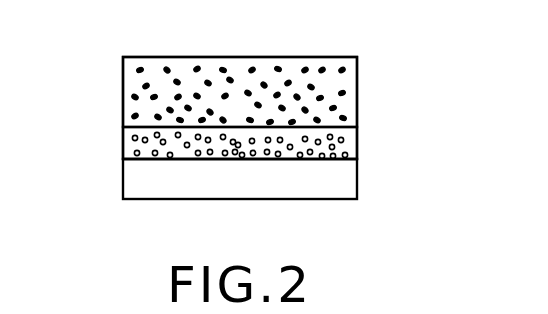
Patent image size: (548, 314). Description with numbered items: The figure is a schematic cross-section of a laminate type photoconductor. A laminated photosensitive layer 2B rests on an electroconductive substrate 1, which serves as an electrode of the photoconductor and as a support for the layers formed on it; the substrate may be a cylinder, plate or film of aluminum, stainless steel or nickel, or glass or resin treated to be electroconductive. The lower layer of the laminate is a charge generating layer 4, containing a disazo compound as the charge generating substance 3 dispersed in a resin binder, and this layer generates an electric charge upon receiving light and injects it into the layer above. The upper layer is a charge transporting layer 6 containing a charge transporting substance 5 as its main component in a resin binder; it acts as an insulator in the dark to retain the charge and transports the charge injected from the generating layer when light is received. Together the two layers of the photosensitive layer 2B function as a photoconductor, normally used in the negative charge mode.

The electroconductive substrate 1 is at (342, 186).
The laminated photosensitive layer 2B is at (422, 80).
The charge generating substance 3 is at (133, 138).
The charge generating layer 4 is at (347, 146).
The charge transporting substance 5 is at (133, 97).
The charge transporting layer 6 is at (347, 105).